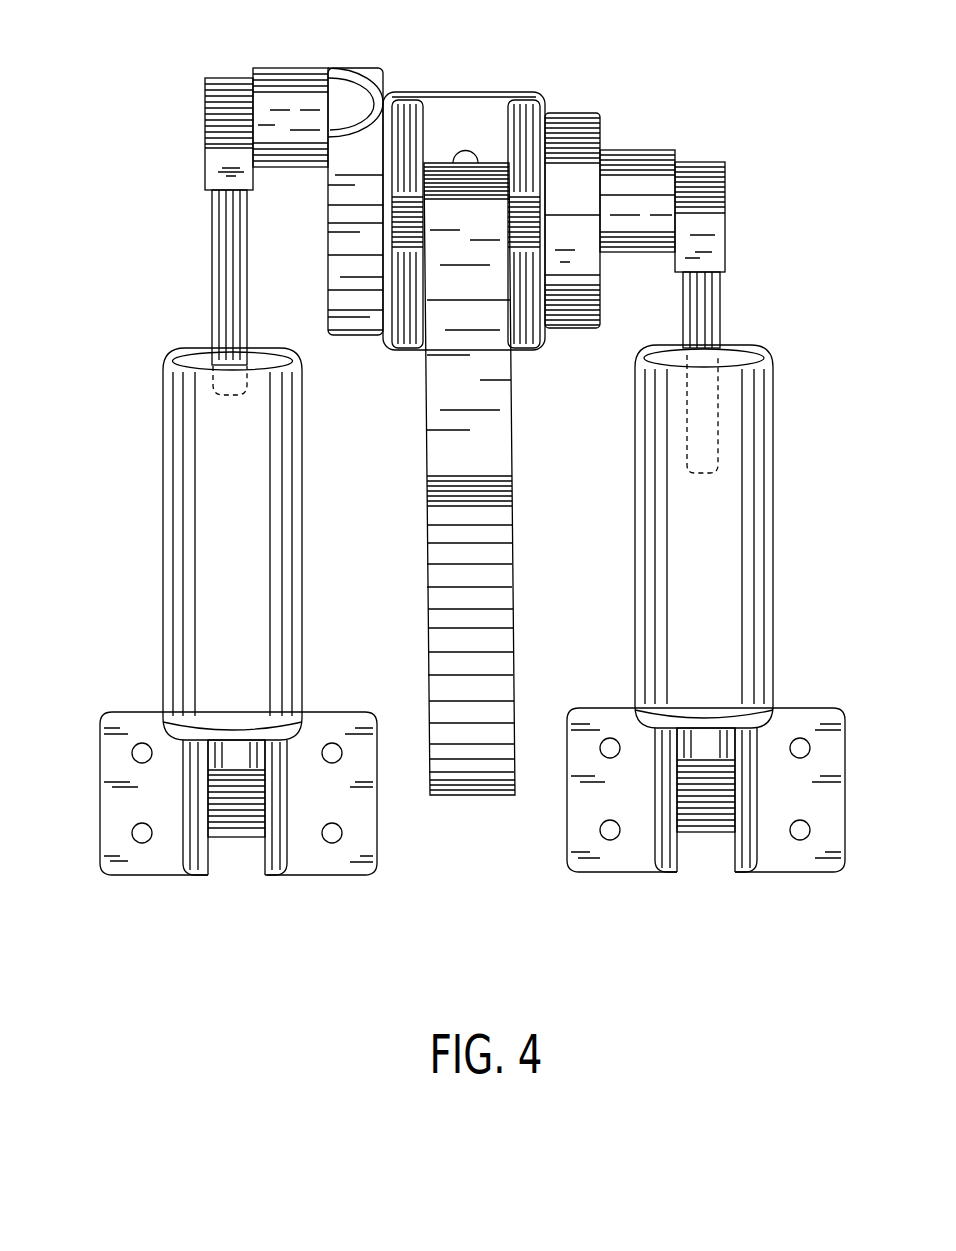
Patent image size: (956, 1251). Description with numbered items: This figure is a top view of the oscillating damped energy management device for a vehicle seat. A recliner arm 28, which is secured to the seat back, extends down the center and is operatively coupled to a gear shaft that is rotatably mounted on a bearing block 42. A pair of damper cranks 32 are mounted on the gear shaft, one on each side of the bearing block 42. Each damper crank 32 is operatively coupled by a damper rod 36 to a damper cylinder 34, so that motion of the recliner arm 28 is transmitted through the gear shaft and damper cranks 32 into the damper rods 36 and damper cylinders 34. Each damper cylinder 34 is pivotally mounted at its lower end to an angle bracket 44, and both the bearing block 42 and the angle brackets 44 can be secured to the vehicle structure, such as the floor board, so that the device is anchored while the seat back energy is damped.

The recliner arm 28 is at (448, 716).
The damper crank 32 is at (573, 142).
The damper cylinder 34 is at (190, 546).
The damper rod 36 is at (222, 276).
The bearing block 42 is at (530, 90).
The angle bracket 44 is at (160, 855).